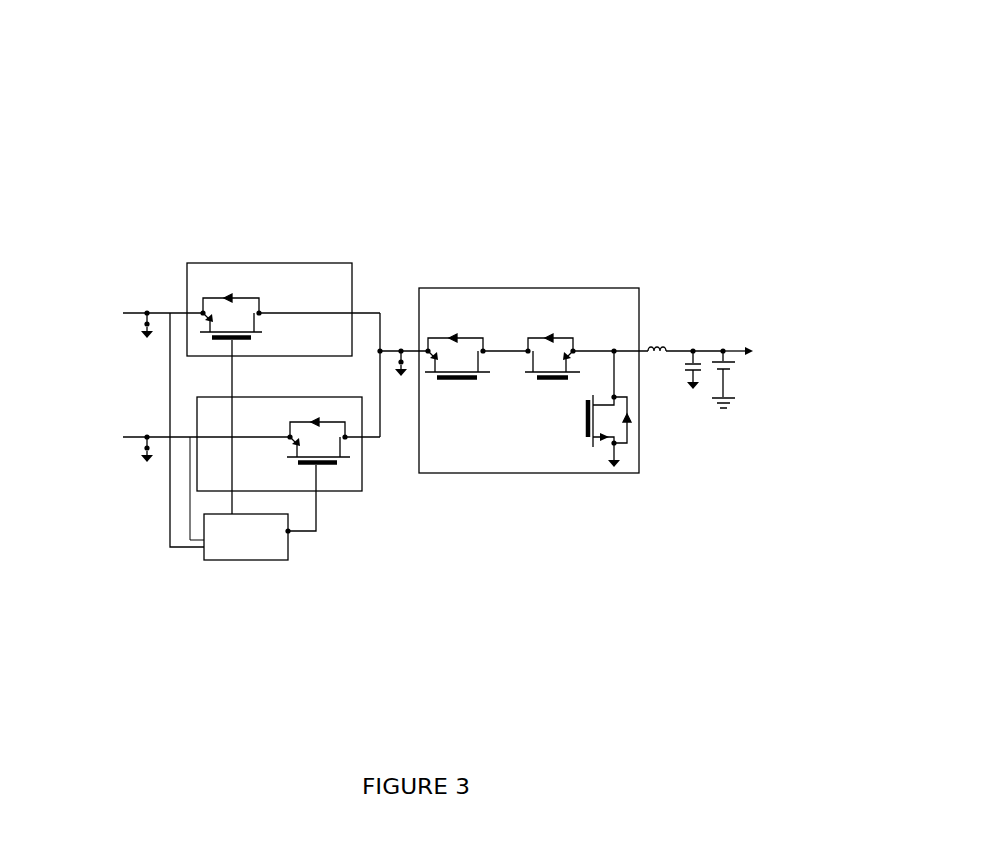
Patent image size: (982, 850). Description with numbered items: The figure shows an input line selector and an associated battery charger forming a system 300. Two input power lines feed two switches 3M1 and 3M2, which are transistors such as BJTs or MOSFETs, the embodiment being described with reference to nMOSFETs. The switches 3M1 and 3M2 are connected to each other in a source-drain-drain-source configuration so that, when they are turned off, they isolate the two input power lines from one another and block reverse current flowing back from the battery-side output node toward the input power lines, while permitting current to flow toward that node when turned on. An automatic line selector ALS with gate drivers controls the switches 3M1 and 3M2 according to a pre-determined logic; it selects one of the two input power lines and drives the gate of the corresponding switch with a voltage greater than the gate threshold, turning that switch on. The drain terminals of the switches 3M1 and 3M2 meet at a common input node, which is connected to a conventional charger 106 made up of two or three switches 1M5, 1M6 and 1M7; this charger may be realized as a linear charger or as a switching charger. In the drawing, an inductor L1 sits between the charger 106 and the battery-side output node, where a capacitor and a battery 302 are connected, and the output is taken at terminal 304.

The system 300 is at (366, 128).
The conventional charger 106 is at (543, 287).
The battery 302 is at (735, 372).
The output node 304 is at (754, 352).
The switch 3M1 is at (283, 309).
The switch 3M2 is at (288, 464).
The switch 1M5 is at (476, 346).
The switch 1M6 is at (586, 346).
The switch 1M7 is at (588, 407).
The inductor L1 is at (685, 340).
The automatic line selector ALS is at (247, 537).